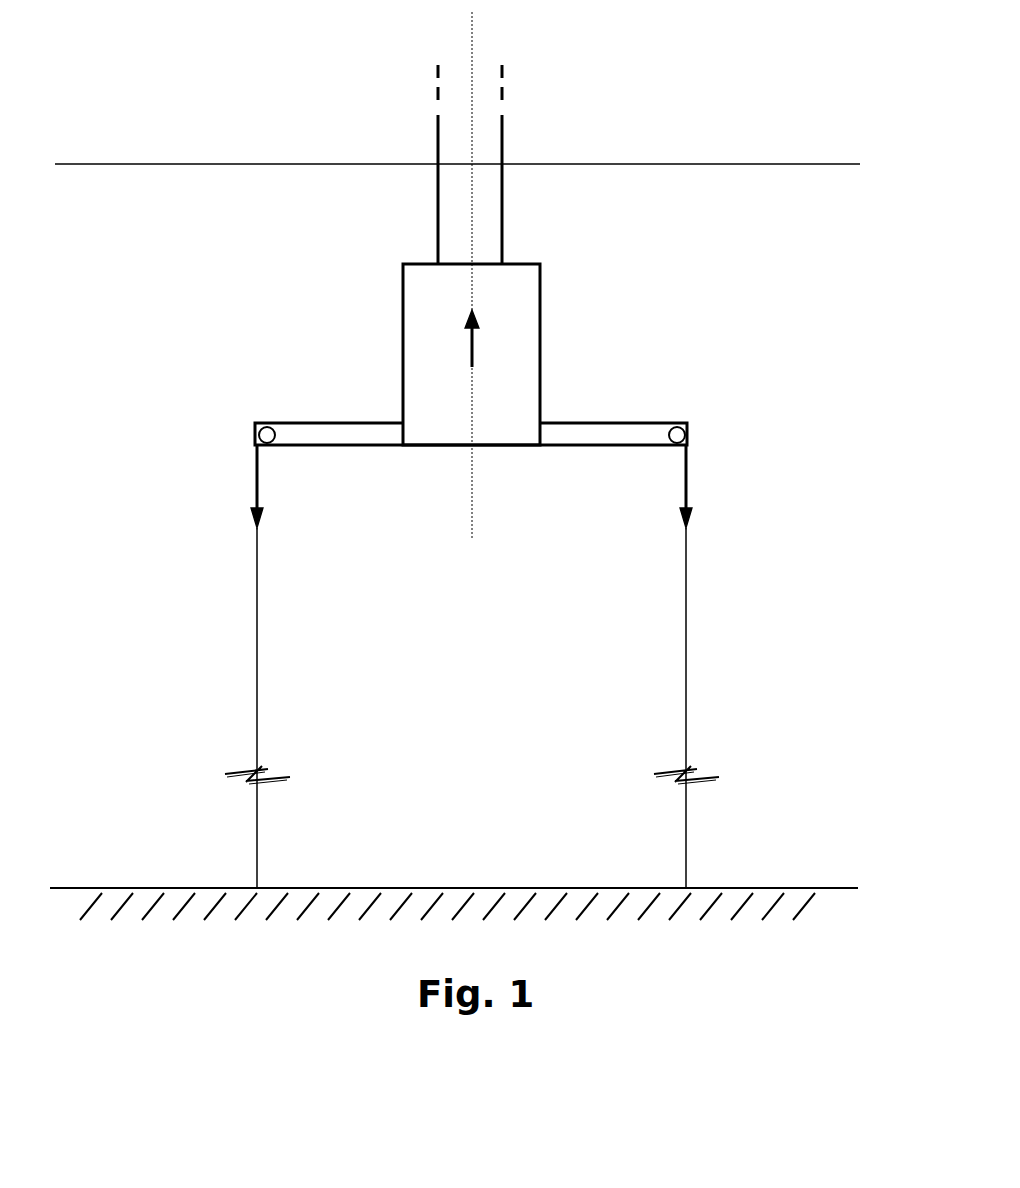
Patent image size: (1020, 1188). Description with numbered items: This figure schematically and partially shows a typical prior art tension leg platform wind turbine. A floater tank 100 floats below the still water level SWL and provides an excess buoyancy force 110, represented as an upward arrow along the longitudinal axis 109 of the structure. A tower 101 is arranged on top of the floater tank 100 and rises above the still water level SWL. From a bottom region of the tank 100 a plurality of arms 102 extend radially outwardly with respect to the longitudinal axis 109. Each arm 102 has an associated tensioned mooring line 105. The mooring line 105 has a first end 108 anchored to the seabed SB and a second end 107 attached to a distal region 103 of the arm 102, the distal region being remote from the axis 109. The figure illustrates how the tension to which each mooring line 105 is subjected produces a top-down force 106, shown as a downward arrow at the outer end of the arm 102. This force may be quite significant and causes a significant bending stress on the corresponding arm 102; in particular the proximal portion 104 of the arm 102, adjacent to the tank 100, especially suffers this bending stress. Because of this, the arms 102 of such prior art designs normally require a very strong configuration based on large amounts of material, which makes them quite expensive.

The floater tank 100 is at (525, 298).
The tower 101 is at (492, 130).
The arm 102 is at (318, 440).
The distal region of the arm 103 is at (688, 423).
The proximal portion of the arm 104 is at (540, 448).
The tensioned mooring line 105 is at (688, 657).
The top-down force 106 is at (690, 483).
The second end of the mooring line 107 is at (255, 438).
The first end of the mooring line 108 is at (253, 886).
The longitudinal axis 109 is at (470, 510).
The excess buoyancy force 110 is at (475, 345).
The still water level SWL is at (793, 163).
The seabed SB is at (795, 887).